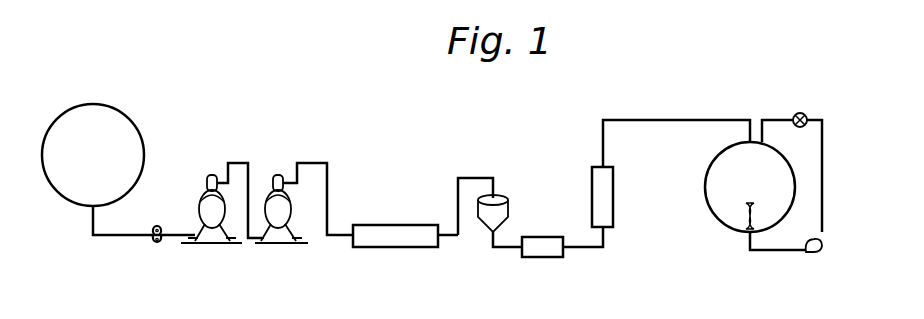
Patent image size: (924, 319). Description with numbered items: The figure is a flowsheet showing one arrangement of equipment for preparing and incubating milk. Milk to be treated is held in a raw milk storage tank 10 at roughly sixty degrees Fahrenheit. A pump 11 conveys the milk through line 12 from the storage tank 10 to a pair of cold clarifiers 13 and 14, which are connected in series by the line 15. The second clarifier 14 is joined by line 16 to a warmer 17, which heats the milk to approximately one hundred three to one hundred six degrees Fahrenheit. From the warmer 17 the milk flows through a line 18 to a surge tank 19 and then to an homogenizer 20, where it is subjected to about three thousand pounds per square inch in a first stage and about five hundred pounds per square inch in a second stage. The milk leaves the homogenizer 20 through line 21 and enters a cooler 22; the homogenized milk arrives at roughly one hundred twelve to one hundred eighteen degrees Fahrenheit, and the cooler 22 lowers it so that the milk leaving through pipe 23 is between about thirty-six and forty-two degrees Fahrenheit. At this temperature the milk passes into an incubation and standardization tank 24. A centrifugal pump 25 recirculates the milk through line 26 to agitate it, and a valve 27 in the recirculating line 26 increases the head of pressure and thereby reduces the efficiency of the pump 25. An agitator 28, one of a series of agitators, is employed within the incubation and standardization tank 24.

The raw milk storage tank 10 is at (101, 115).
The pump 11 is at (157, 246).
The line 12 is at (126, 234).
The cold clarifier 13 is at (206, 194).
The cold clarifier 14 is at (268, 190).
The line 15 is at (246, 215).
The line 16 is at (330, 189).
The warmer 17 is at (390, 247).
The line 18 is at (474, 177).
The surge tank 19 is at (505, 207).
The homogenizer 20 is at (542, 257).
The line 21 is at (590, 249).
The cooler 22 is at (613, 190).
The pipe 23 is at (653, 119).
The incubation and standardization tank 24 is at (710, 221).
The centrifugal pump 25 is at (826, 244).
The line 26 is at (826, 156).
The valve 27 is at (802, 112).
The agitator 28 is at (752, 203).